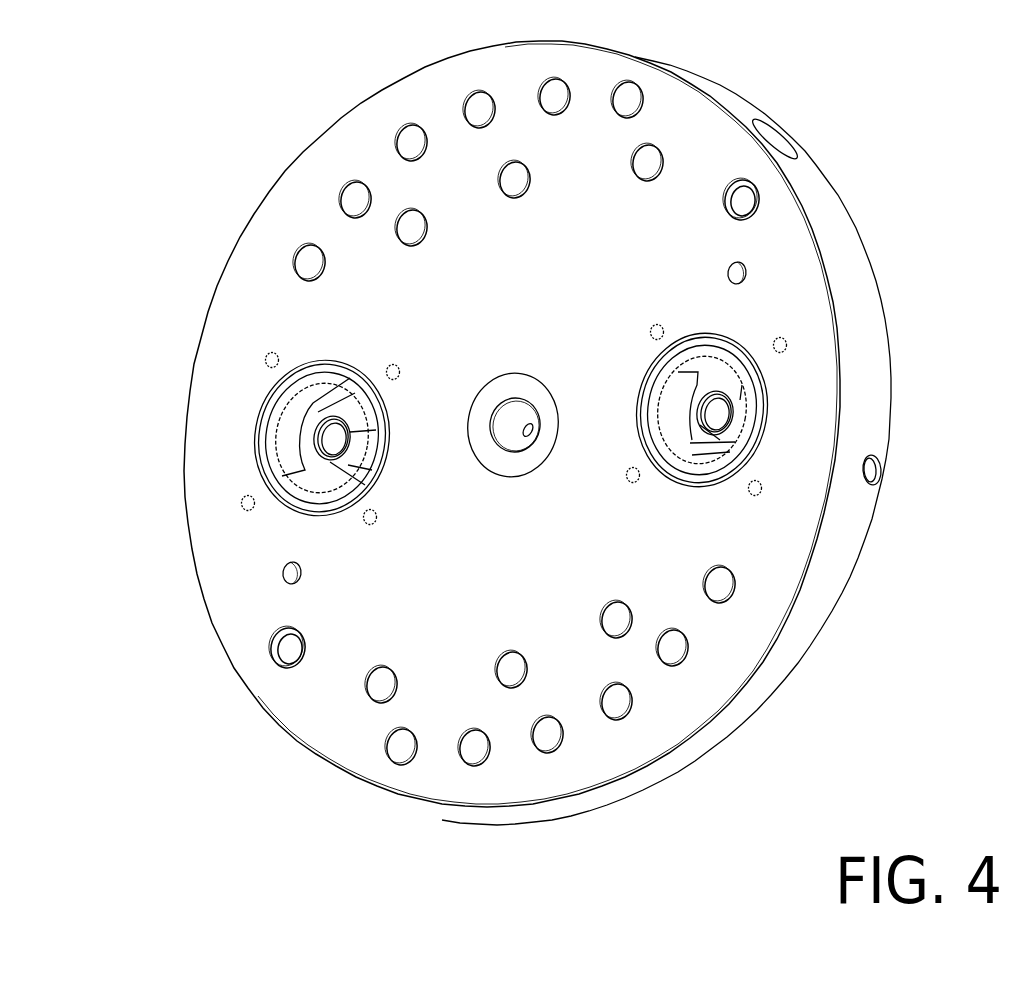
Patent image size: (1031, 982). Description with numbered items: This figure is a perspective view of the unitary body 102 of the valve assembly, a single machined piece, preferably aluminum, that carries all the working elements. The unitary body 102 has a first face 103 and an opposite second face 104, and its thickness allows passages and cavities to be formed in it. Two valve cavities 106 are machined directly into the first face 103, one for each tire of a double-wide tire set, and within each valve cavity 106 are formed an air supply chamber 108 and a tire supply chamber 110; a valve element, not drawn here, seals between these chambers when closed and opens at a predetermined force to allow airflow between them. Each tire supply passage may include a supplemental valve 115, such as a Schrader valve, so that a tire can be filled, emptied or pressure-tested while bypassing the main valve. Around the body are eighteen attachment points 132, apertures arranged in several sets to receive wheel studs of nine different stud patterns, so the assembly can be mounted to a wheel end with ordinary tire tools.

The unitary body 102 is at (553, 433).
The first face 103 is at (663, 708).
The second face 104 is at (792, 670).
The valve cavity 106 is at (262, 409).
The air supply chamber 108 is at (283, 427).
The tire supply chamber 110 is at (323, 438).
The supplemental valve 115 is at (737, 273).
The attachment points 132 is at (310, 263).